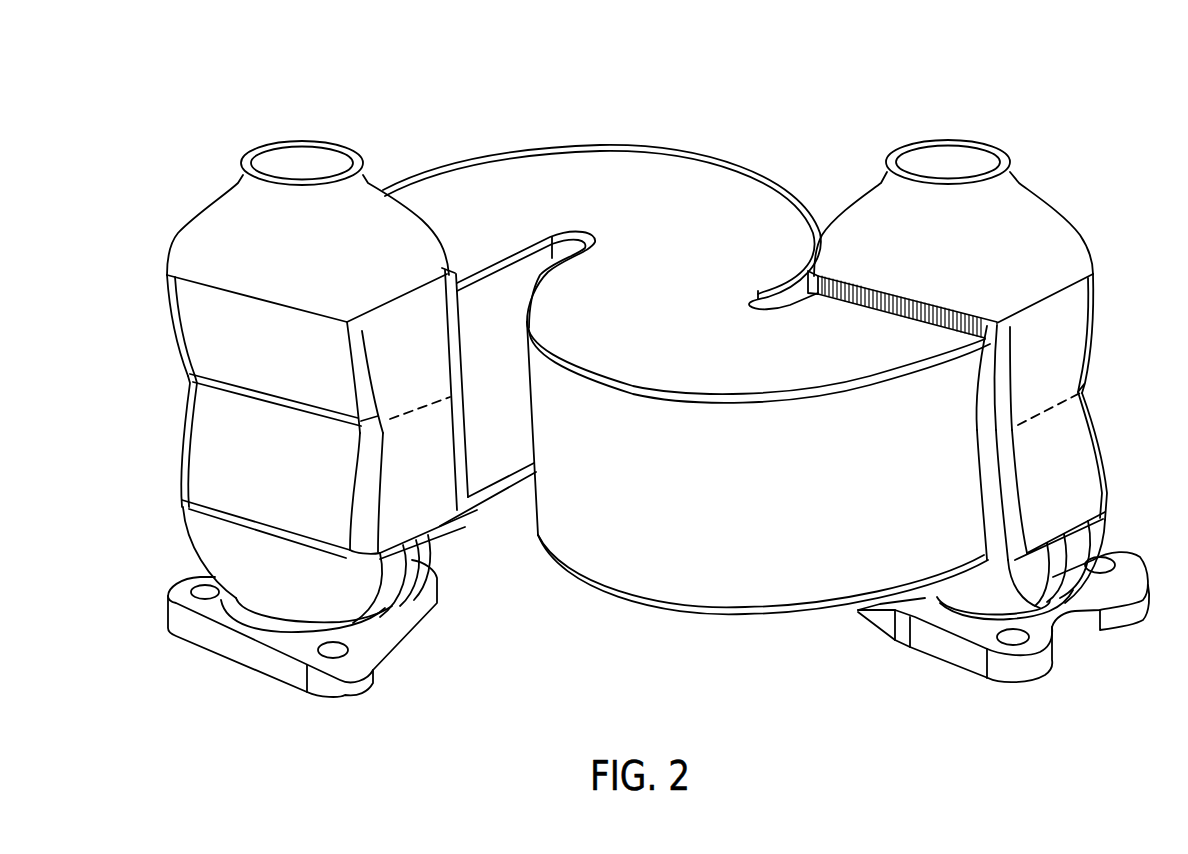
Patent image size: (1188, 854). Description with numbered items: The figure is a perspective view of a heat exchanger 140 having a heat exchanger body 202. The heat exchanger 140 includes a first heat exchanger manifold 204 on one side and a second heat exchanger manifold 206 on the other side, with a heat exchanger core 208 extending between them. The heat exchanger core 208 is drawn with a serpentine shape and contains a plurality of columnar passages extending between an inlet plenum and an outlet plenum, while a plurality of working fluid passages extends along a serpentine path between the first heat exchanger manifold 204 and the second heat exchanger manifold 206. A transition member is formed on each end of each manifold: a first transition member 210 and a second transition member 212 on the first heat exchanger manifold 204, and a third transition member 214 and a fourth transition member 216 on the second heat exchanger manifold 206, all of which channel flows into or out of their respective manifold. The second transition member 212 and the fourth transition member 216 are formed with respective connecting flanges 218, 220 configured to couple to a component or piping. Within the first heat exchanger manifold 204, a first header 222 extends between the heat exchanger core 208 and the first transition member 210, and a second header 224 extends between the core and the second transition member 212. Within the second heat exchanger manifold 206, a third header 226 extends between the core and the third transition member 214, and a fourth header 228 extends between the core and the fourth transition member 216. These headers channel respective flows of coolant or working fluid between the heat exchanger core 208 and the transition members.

The heat exchanger 140 is at (699, 73).
The heat exchanger body 202 is at (382, 133).
The first heat exchanger manifold 204 is at (432, 497).
The second heat exchanger manifold 206 is at (1063, 440).
The heat exchanger core 208 is at (710, 190).
The first transition member 210 is at (210, 232).
The second transition member 212 is at (357, 595).
The third transition member 214 is at (1037, 217).
The fourth transition member 216 is at (1090, 550).
The connecting flange 218 is at (293, 670).
The connecting flange 220 is at (1042, 665).
The first header 222 is at (290, 360).
The second header 224 is at (293, 477).
The third header 226 is at (1070, 370).
The fourth header 228 is at (1080, 502).